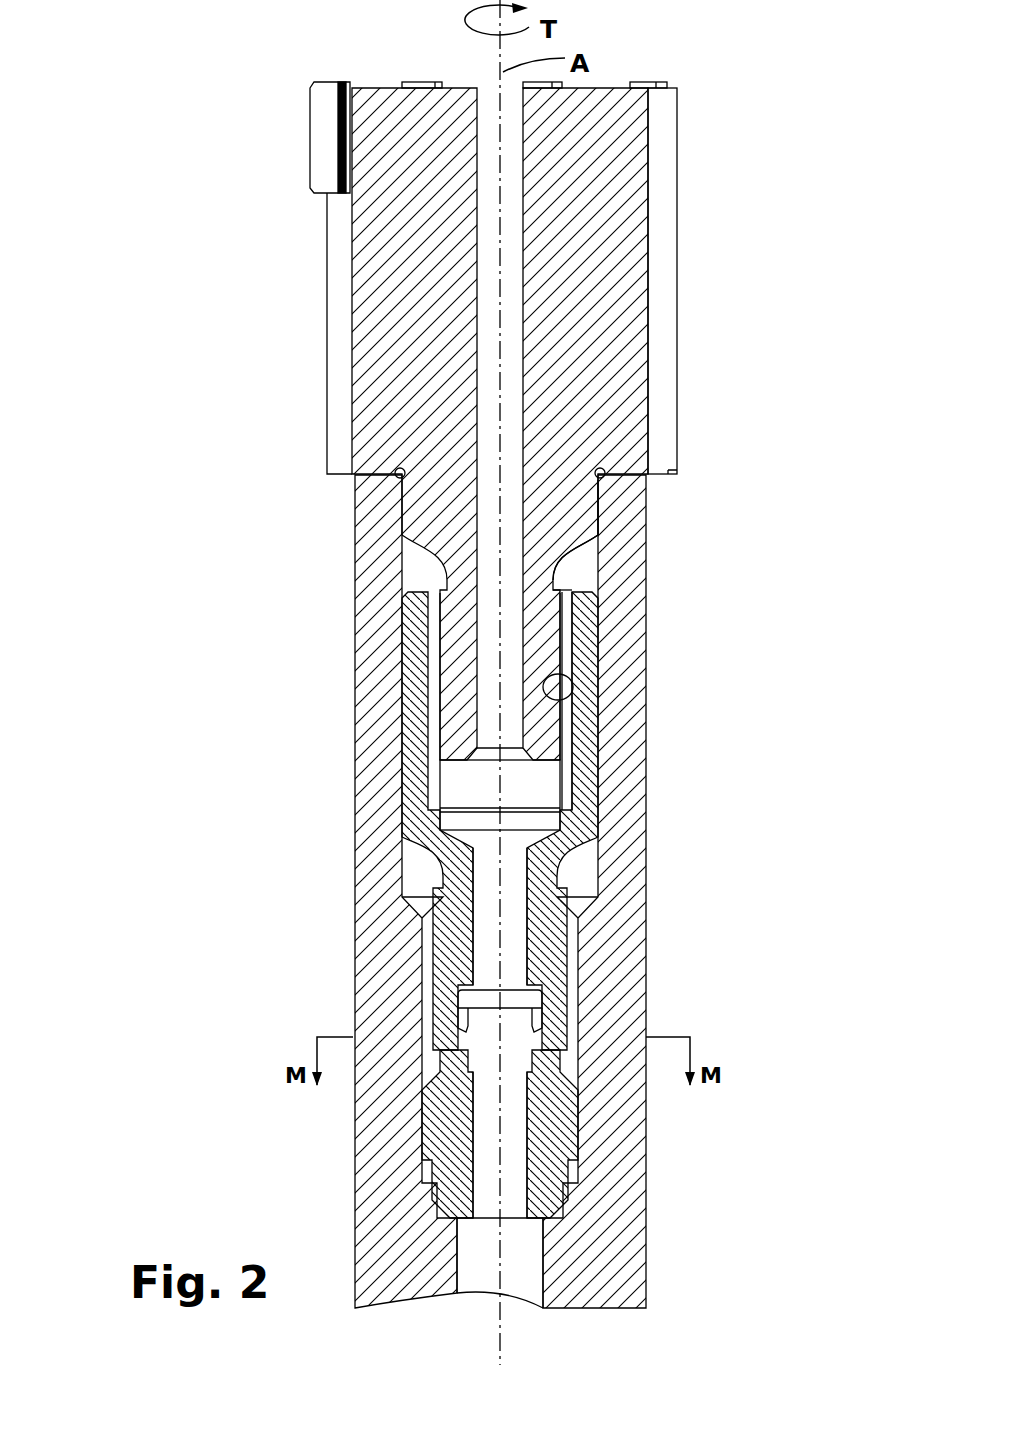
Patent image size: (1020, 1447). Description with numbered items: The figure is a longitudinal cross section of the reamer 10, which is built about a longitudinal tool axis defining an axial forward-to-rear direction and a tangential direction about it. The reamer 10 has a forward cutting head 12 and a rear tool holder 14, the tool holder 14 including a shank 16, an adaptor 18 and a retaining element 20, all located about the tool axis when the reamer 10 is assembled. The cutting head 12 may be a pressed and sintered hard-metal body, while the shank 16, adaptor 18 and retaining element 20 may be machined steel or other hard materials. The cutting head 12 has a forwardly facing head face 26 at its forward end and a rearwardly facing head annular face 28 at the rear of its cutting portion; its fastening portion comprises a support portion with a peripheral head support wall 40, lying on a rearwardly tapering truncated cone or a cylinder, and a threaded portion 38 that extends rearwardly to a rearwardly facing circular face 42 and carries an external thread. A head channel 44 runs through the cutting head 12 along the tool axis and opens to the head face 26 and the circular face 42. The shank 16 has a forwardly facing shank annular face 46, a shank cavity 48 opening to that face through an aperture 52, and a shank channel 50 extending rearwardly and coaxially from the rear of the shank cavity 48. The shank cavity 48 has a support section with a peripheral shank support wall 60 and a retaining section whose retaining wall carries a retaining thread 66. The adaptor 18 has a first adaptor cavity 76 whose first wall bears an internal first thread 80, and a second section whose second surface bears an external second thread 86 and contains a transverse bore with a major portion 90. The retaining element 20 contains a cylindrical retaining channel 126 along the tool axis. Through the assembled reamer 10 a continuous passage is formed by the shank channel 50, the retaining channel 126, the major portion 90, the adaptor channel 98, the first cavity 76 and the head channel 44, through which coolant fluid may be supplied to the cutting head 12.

The reamer 10 is at (190, 182).
The cutting head 12 is at (322, 257).
The tool holder 14 is at (287, 862).
The shank 16 is at (355, 670).
The adaptor 18 is at (400, 763).
The retaining element 20 is at (420, 1120).
The head face 26 is at (380, 86).
The head annular face 28 is at (355, 490).
The threaded portion 38 is at (460, 628).
The peripheral head support wall 40 is at (600, 508).
The circular face 42 is at (565, 755).
The head channel 44 is at (512, 176).
The shank annular face 46 is at (372, 476).
The shank cavity 48 is at (582, 580).
The shank channel 50 is at (507, 1282).
The aperture 52 is at (625, 455).
The peripheral shank support wall 60 is at (568, 562).
The retaining thread 66 is at (425, 978).
The first adaptor cavity 76 is at (530, 790).
The first thread 80 is at (560, 668).
The second thread 86 is at (560, 1008).
The major portion 90 is at (508, 1002).
The adaptor channel 98 is at (502, 940).
The retaining channel 126 is at (512, 1193).